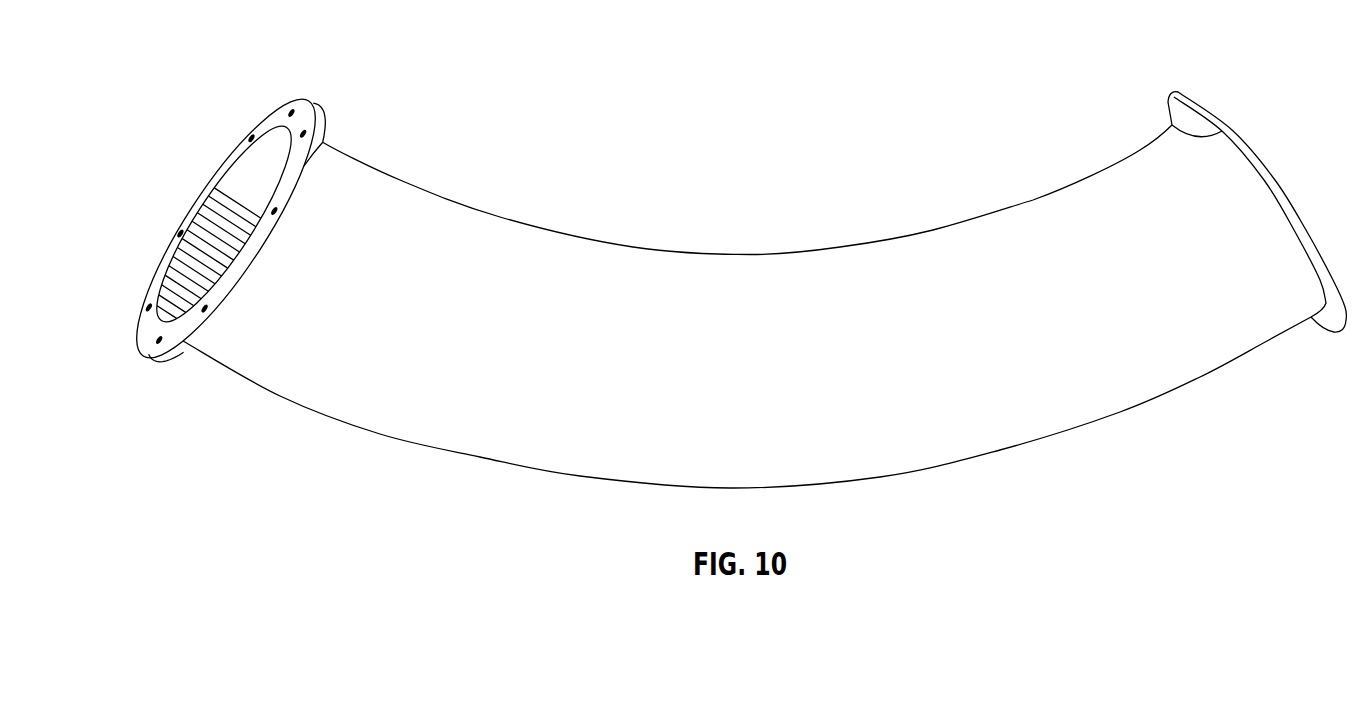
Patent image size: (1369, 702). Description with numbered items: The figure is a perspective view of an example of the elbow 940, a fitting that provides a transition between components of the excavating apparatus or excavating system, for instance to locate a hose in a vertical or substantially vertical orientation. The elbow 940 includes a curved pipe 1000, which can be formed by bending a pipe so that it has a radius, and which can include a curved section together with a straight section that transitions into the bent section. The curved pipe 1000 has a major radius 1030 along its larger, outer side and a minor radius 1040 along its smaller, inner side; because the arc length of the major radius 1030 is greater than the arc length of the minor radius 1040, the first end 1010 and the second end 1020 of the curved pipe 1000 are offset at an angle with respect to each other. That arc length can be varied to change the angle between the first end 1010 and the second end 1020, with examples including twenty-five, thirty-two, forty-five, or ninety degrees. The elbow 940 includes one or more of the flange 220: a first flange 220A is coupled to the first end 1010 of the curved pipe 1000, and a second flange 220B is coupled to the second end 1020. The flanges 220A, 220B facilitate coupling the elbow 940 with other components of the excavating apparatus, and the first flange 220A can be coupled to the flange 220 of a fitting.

The elbow 940 is at (940, 68).
The curved pipe 1000 is at (822, 288).
The minor radius 1040 is at (933, 211).
The major radius 1030 is at (276, 405).
The first end 1010 is at (146, 370).
The second end 1020 is at (1306, 337).
The flange 220 is at (200, 175).
The first flange 220A is at (303, 165).
The second flange 220B is at (1172, 125).